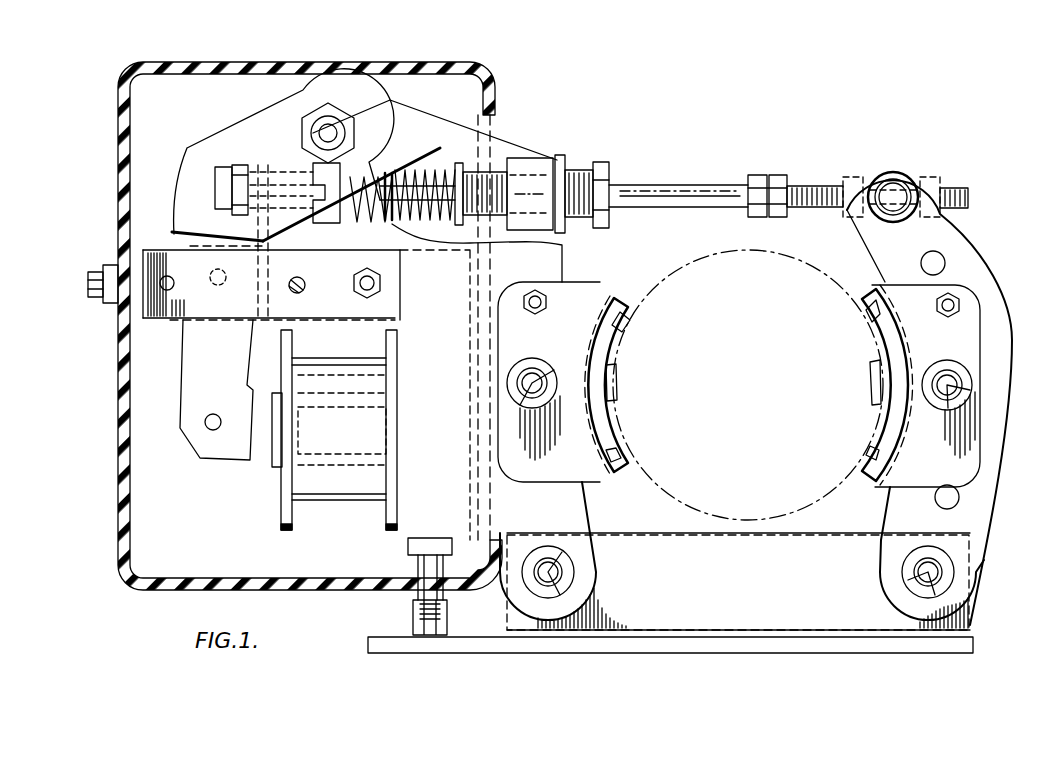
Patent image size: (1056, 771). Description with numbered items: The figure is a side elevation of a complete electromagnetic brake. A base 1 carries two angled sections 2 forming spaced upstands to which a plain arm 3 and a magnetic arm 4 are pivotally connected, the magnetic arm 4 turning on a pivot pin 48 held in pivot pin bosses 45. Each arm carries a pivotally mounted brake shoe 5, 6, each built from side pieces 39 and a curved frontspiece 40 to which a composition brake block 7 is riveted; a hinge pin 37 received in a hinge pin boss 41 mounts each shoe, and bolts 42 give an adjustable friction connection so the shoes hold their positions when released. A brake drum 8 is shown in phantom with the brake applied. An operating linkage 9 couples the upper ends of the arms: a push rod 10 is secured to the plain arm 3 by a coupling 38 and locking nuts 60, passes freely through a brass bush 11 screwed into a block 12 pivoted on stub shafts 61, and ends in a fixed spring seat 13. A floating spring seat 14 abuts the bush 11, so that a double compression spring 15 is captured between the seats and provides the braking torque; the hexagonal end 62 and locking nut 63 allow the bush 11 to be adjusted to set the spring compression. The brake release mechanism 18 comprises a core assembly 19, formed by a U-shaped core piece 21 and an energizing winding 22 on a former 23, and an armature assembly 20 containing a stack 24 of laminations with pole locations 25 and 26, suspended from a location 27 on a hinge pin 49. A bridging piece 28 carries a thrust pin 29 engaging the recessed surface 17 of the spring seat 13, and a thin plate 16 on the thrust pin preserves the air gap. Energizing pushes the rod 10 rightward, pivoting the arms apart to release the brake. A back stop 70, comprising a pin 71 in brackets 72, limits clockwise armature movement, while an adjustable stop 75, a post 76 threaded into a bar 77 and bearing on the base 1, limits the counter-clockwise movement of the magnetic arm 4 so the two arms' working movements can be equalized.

The base 1 is at (785, 645).
The angled sections 2 is at (738, 595).
The plain arm 3 is at (985, 513).
The magnetic arm 4 is at (588, 500).
The brake shoe 5 is at (860, 478).
The brake shoe 6 is at (596, 292).
The composition brake block 7 is at (622, 446).
The brake drum 8 is at (757, 520).
The operating linkage 9 is at (692, 188).
The push rod 10 is at (668, 200).
The hollow cylindrical bush 11 is at (602, 170).
The block 12 is at (518, 160).
The fixed spring seat 13 is at (330, 250).
The floating spring seat 14 is at (460, 225).
The compression spring 15 is at (393, 170).
The thin plate 16 is at (268, 244).
The recessed surface 17 is at (318, 180).
The brake release mechanism 18 is at (208, 466).
The core assembly 19 is at (318, 468).
The armature assembly 20 is at (183, 380).
The U-shaped core piece 21 is at (465, 272).
The energizing winding 22 is at (350, 500).
The former 23 is at (282, 532).
The stack of laminations 24 is at (192, 418).
The pole location 25 is at (263, 440).
The pole location 26 is at (303, 292).
The suspension location 27 is at (310, 133).
The bridging piece 28 is at (262, 241).
The thrust pin 29 is at (385, 215).
The hinge pin 37 is at (536, 380).
The coupling 38 is at (893, 175).
The side pieces 39 is at (560, 468).
The curved frontspiece 40 is at (620, 300).
The hinge pin boss 41 is at (515, 370).
The bolts 42 is at (540, 302).
The pivot pin bosses 45 is at (574, 578).
The pivot pin 48 is at (548, 560).
The hinge pin 49 is at (435, 121).
The locking nuts 60 is at (845, 180).
The stub shafts 61 is at (545, 194).
The hexagonal end 62 is at (612, 175).
The locking nut 63 is at (580, 168).
The back stop 70 is at (128, 307).
The pin 71 is at (164, 276).
The metal brackets 72 is at (163, 322).
The adjustable stop 75 is at (415, 614).
The post 76 is at (447, 614).
The bar 77 is at (408, 548).